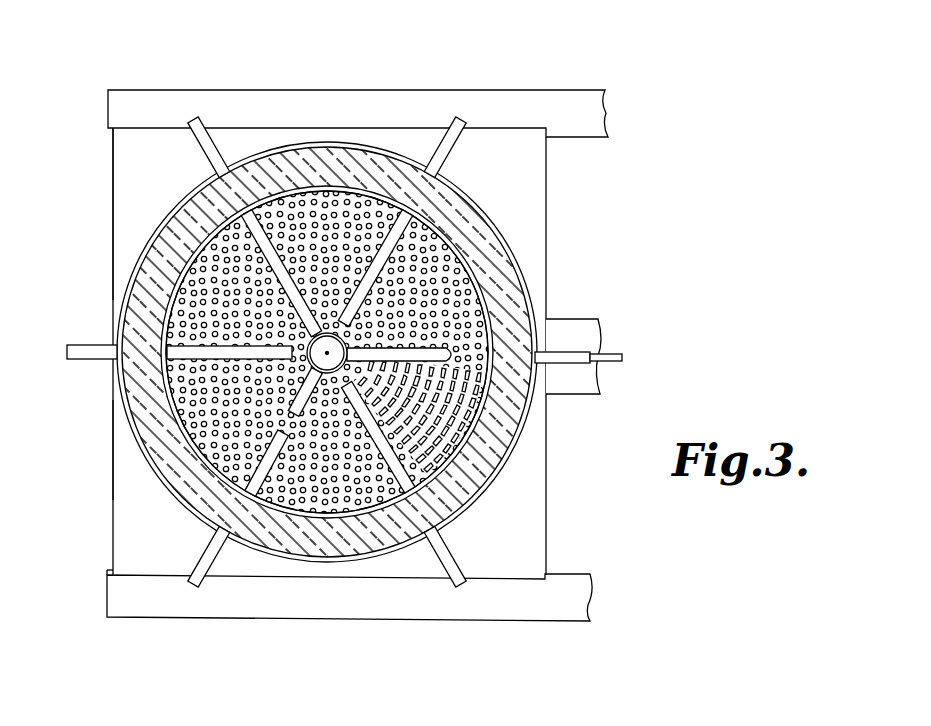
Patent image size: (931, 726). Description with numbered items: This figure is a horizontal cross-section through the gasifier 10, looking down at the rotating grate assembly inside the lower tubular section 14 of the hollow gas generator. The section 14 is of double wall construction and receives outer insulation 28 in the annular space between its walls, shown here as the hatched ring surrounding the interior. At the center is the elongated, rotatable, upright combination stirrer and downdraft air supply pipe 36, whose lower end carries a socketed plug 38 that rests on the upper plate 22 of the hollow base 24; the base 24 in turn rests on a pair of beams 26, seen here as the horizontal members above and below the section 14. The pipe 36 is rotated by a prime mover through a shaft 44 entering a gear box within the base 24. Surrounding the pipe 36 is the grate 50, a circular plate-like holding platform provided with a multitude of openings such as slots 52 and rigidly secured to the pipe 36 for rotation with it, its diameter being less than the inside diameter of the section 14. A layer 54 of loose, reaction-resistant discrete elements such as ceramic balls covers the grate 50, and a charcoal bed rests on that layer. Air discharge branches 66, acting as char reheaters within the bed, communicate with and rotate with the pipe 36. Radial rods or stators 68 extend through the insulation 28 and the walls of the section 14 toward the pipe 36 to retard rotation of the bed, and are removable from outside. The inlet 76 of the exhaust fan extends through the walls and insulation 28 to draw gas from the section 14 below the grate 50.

The gasifier 10 is at (333, 123).
The lower tubular section 14 is at (147, 236).
The upper plate 22 is at (125, 457).
The hollow base 24 is at (113, 525).
The beams 26 is at (560, 95).
The outer insulation 28 is at (143, 300).
The combination stirrer and downdraft air supply pipe 36 is at (300, 338).
The socketed plug 38 is at (328, 332).
The shaft 44 is at (612, 362).
The grate 50 is at (460, 440).
The slots 52 is at (409, 416).
The layer of discrete elements 54 is at (457, 295).
The air discharge branches 66 is at (384, 345).
The radial rods or stators 68 is at (457, 142).
The inlet 76 is at (600, 333).